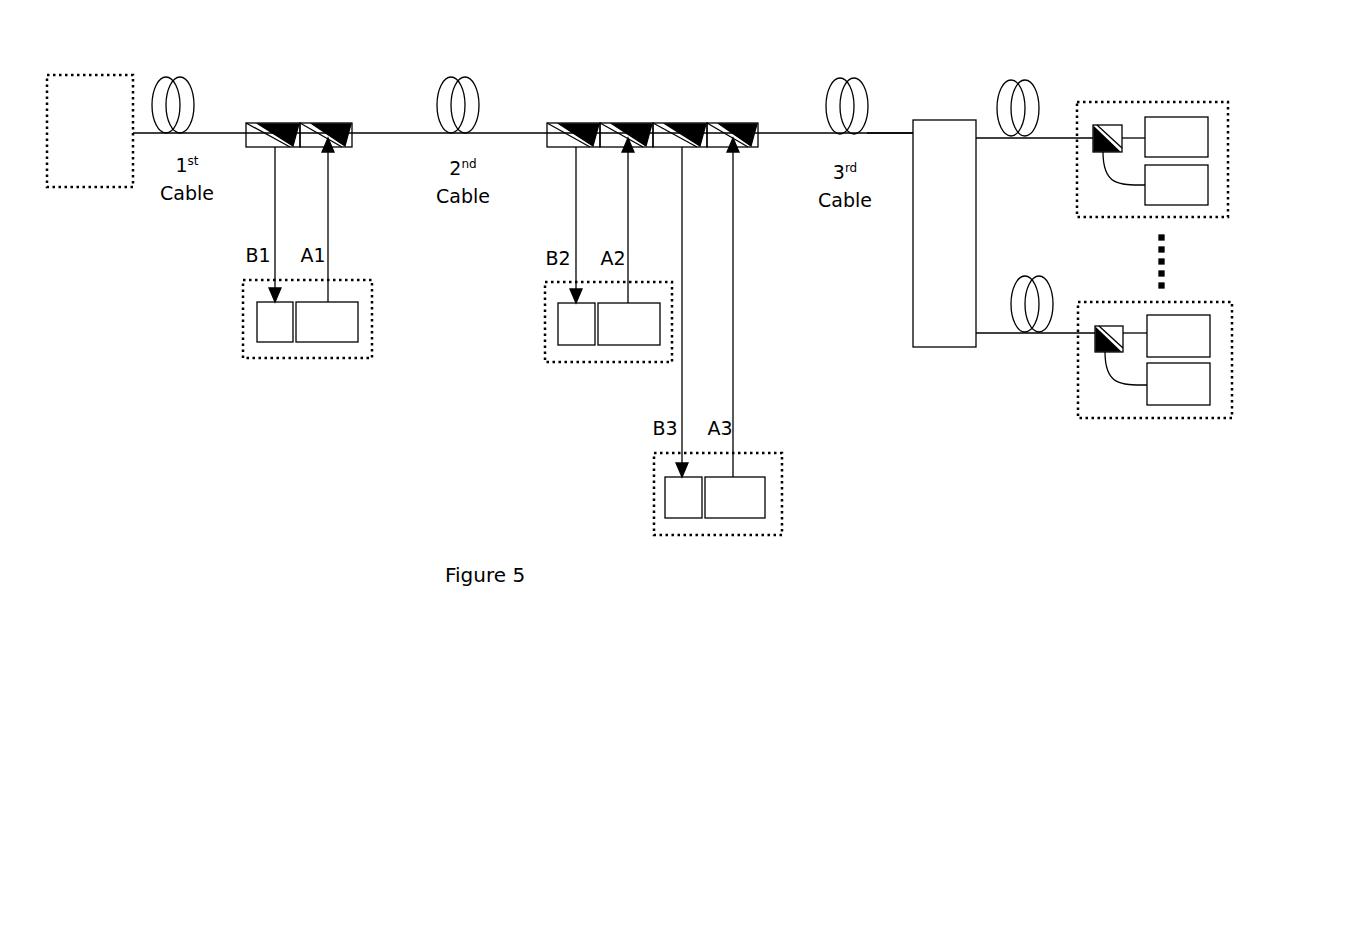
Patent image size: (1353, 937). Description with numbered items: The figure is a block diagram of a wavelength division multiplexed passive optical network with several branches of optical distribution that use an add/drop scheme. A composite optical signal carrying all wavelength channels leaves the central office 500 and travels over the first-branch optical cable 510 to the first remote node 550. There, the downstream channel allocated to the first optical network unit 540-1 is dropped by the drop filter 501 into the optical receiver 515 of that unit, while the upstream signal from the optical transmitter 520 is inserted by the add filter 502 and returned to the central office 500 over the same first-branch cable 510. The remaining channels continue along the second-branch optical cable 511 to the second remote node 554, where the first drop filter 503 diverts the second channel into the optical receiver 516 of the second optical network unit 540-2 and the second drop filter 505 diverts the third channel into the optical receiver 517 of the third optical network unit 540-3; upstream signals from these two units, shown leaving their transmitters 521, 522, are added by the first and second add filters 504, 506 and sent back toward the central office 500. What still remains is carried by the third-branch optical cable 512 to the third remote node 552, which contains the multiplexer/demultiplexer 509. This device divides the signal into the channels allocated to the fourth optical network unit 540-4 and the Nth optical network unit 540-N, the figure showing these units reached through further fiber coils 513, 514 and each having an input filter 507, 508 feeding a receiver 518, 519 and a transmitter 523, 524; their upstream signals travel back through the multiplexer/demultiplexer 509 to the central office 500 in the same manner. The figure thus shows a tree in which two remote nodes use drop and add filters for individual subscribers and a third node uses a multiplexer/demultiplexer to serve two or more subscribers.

The central office 500 is at (75, 173).
The first-branch optical cable 510 is at (168, 74).
The second fiber coil 511 is at (440, 78).
The third-branch optical cable 512 is at (825, 100).
The fiber coil to subscriber 4 513 is at (995, 95).
The fiber coil to subscriber N 514 is at (1025, 285).
The first remote node 550 is at (284, 76).
The second remote node 554 is at (600, 57).
The drop filter 501 is at (250, 121).
The add filter 502 is at (330, 121).
The first drop filter 503 is at (547, 122).
The first add filter 504 is at (600, 122).
The second drop filter 505 is at (660, 122).
The second add filter 506 is at (730, 122).
The subscriber 4 filter 507 is at (1093, 128).
The subscriber N filter 508 is at (1098, 326).
The multiplexer/demultiplexer 509 is at (925, 118).
The third remote node 552 is at (920, 354).
The optical receiver 515 is at (258, 338).
The optical receiver 516 is at (560, 338).
The optical receiver 517 is at (665, 510).
The optical transmitter 520 is at (330, 341).
The transmitter of subscriber 2 521 is at (628, 346).
The transmitter of subscriber 3 522 is at (770, 506).
The receiver of subscriber 4 518 is at (1175, 117).
The receiver of subscriber N 519 is at (1210, 322).
The transmitter of subscriber 4 523 is at (1213, 183).
The transmitter of subscriber N 524 is at (1213, 390).
The first optical network unit 540-1 is at (292, 387).
The second optical network unit 540-2 is at (569, 389).
The third optical network unit 540-3 is at (737, 516).
The fourth optical network unit 540-4 is at (1196, 149).
The Nth optical network unit 540-N is at (1204, 372).